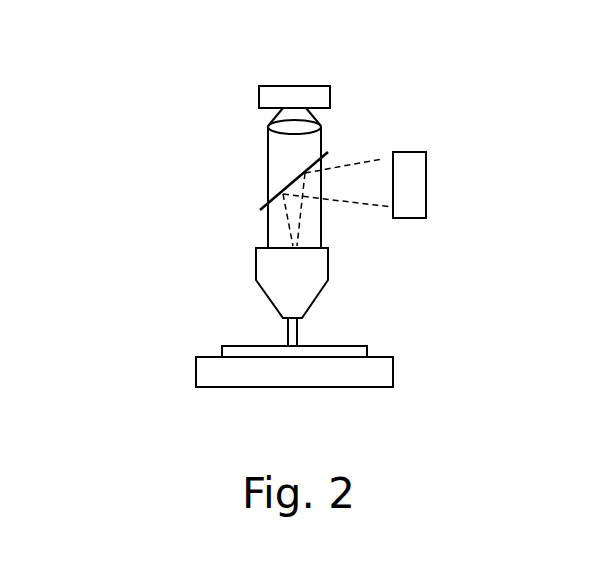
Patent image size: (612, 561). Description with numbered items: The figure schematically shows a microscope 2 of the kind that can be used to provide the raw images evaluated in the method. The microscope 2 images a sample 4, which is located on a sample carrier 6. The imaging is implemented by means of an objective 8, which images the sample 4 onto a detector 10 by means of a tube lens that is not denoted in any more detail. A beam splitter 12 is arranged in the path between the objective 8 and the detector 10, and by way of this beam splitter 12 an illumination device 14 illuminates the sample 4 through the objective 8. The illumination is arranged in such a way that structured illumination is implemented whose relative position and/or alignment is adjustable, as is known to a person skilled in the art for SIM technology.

The microscope 2 is at (197, 135).
The sample 4 is at (242, 350).
The sample carrier 6 is at (233, 375).
The objective 8 is at (272, 267).
The detector 10 is at (293, 97).
The beam splitter 12 is at (282, 192).
The illumination device 14 is at (408, 168).